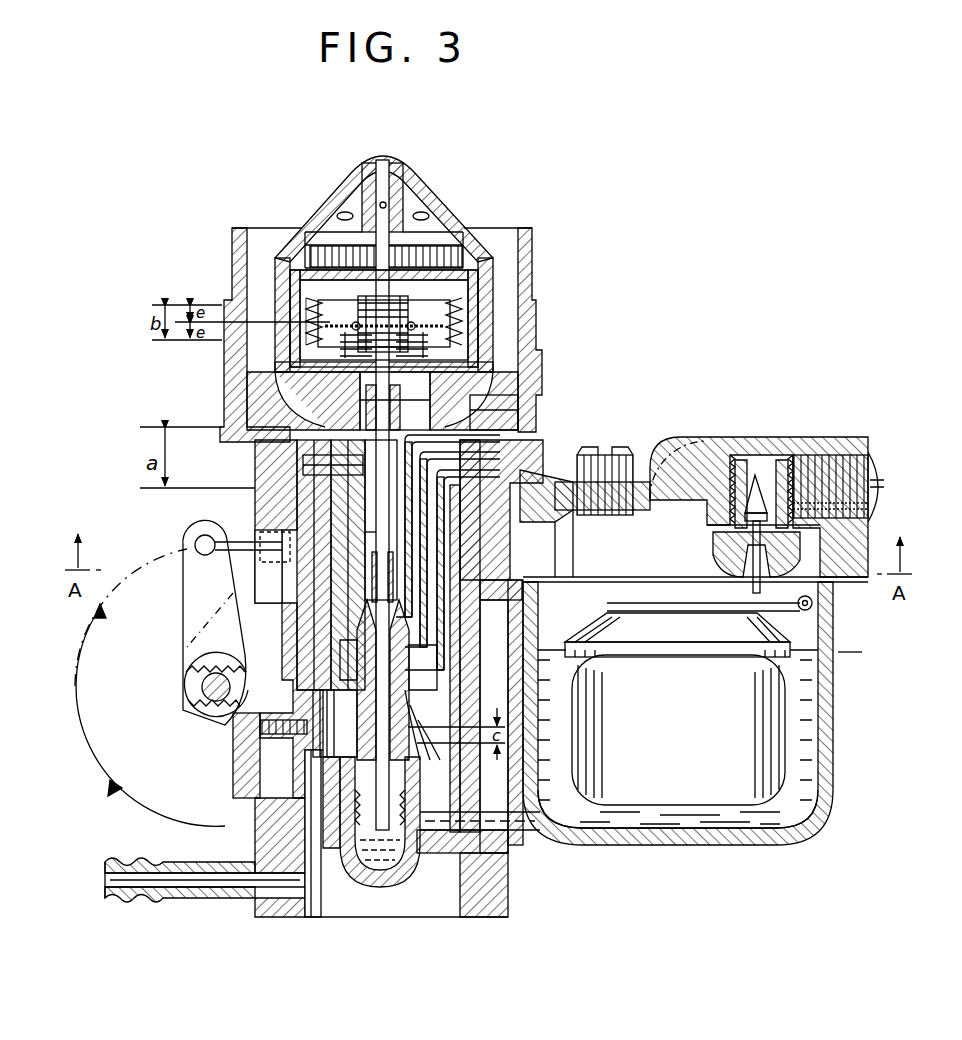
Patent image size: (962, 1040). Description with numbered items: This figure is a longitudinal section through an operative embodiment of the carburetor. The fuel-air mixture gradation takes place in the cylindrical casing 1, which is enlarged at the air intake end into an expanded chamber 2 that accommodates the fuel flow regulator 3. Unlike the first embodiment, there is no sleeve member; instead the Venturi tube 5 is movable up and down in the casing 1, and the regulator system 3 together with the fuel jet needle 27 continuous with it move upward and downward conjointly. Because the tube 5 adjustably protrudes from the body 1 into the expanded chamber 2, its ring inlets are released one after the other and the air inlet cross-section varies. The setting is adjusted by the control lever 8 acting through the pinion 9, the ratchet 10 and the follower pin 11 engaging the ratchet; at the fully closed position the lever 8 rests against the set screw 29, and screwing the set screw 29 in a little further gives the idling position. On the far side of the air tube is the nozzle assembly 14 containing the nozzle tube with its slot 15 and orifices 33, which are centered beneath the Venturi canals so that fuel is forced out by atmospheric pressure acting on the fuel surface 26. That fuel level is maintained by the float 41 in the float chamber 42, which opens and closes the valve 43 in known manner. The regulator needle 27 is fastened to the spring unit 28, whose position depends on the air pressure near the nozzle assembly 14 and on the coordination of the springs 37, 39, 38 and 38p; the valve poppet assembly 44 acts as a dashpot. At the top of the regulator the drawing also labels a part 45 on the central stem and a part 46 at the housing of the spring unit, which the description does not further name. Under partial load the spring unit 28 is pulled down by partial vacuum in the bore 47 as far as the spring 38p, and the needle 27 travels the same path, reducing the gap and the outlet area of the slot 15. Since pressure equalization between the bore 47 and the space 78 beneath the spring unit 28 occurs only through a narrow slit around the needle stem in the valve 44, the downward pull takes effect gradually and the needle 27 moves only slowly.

The cylindrical casing 1 is at (297, 498).
The air intake enlargement 2 is at (267, 228).
The fuel flow regulator 3 is at (452, 258).
The Venturi tube 5 is at (497, 420).
The control lever 8 is at (200, 586).
The pinion 9 is at (196, 678).
The ratchet 10 is at (262, 777).
The follower pin 11 is at (260, 728).
The nozzle assembly 14 is at (413, 791).
The slot 15 is at (358, 691).
The fuel level 26 is at (896, 654).
The regulator needle 27 is at (347, 420).
The spring unit 28 is at (326, 322).
The set screw 29 is at (240, 535).
The orifices 33 is at (428, 736).
The spring 37 is at (400, 312).
The spring 38 is at (358, 346).
The spring 38p is at (445, 355).
The spring 39 is at (383, 324).
The float 41 is at (768, 697).
The float chamber 42 is at (807, 771).
The valve 43 is at (718, 533).
The valve poppet assembly 44 is at (452, 398).
The rod 45 is at (398, 182).
The housing 46 is at (300, 382).
The bore 47 is at (320, 472).
The space 78 is at (465, 332).